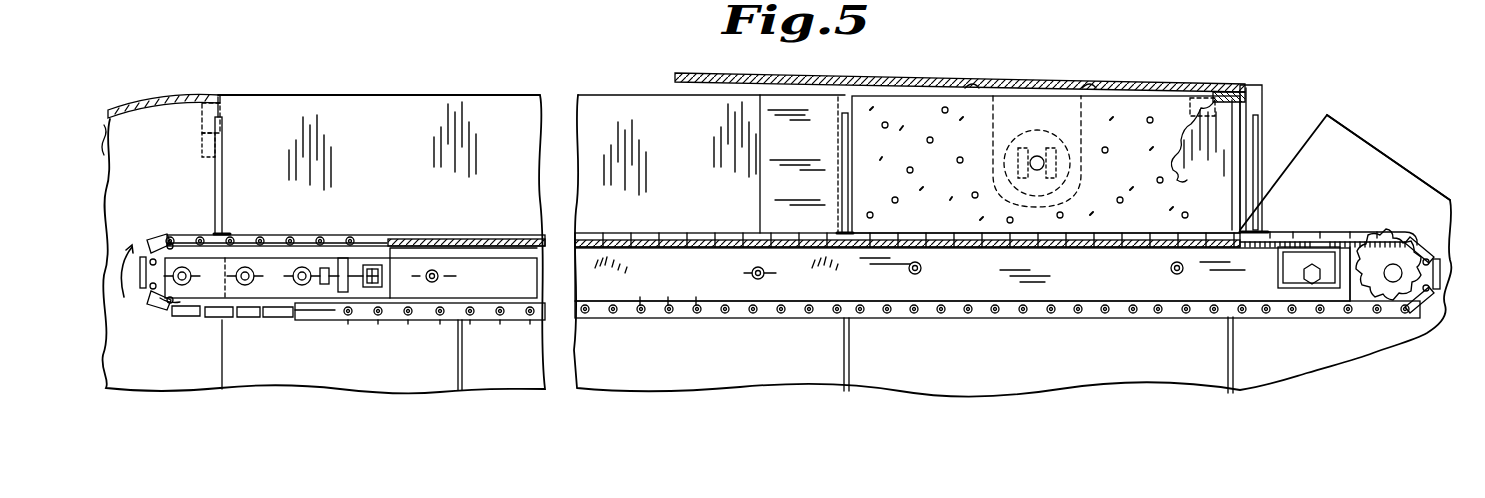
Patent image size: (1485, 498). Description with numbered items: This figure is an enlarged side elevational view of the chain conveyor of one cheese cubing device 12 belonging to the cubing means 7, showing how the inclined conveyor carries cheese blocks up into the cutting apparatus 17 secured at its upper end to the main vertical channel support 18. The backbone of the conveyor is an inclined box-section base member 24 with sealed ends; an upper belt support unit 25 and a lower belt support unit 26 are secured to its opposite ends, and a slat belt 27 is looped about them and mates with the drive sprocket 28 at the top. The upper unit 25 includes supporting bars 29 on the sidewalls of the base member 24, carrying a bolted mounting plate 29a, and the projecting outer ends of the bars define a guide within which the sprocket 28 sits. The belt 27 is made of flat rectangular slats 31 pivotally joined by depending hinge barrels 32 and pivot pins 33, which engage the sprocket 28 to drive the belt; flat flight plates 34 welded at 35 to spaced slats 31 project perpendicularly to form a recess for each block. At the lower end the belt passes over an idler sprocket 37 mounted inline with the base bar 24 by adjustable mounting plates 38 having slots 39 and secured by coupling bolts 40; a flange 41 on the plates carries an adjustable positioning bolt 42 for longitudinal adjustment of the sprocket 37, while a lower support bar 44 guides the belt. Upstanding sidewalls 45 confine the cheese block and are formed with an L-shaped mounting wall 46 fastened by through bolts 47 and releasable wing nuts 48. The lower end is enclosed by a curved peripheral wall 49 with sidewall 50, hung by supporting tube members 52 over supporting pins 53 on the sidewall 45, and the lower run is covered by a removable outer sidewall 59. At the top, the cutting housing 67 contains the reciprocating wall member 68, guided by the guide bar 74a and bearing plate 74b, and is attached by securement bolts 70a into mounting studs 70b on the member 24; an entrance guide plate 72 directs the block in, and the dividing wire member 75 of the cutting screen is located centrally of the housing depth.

The cubing means 7 is at (1150, 67).
The cheese cubing device 12 is at (194, 75).
The cutting apparatus 17 is at (1208, 73).
The channel support 18 is at (1368, 134).
The base member 24 is at (374, 299).
The upper belt support unit 25 is at (1340, 239).
The lower belt support unit 26 is at (346, 257).
The slat belt 27 is at (710, 225).
The drive sprocket 28 is at (1400, 222).
The supporting bar 29 is at (1366, 235).
The mounting plate 29a is at (1306, 237).
The slats 31 is at (510, 319).
The hinge barrels 32 is at (666, 307).
The pivot pin 33 is at (666, 301).
The conveyor flights 34 is at (226, 141).
The weld 35 is at (222, 231).
The idler sprocket 37 is at (182, 239).
The mounting plates 38 is at (278, 299).
The slots 39 is at (238, 267).
The coupling bolts 40 is at (324, 265).
The flange 41 is at (348, 255).
The positioning bolt 42 is at (402, 281).
The lower support bar 44 is at (226, 313).
The sidewalls 45 is at (436, 98).
The L-shaped mounting wall 46 is at (512, 236).
The through bolts 47 is at (446, 273).
The wing nuts 48 is at (438, 277).
The curved peripheral wall 49 is at (154, 94).
The sidewall 50 is at (132, 142).
The supporting tube members 52 is at (228, 91).
The supporting pins 53 is at (196, 150).
The outer sidewall 59 is at (702, 377).
The housing 67 is at (1068, 91).
The reciprocating wall member 68 is at (1246, 135).
The securement bolts 70a is at (922, 267).
The mounting studs 70b is at (924, 271).
The entrance guide plate 72 is at (738, 73).
The guide bar 74a is at (1236, 91).
The bearing plate 74b is at (1193, 98).
The dividing wire member 75 is at (1020, 110).